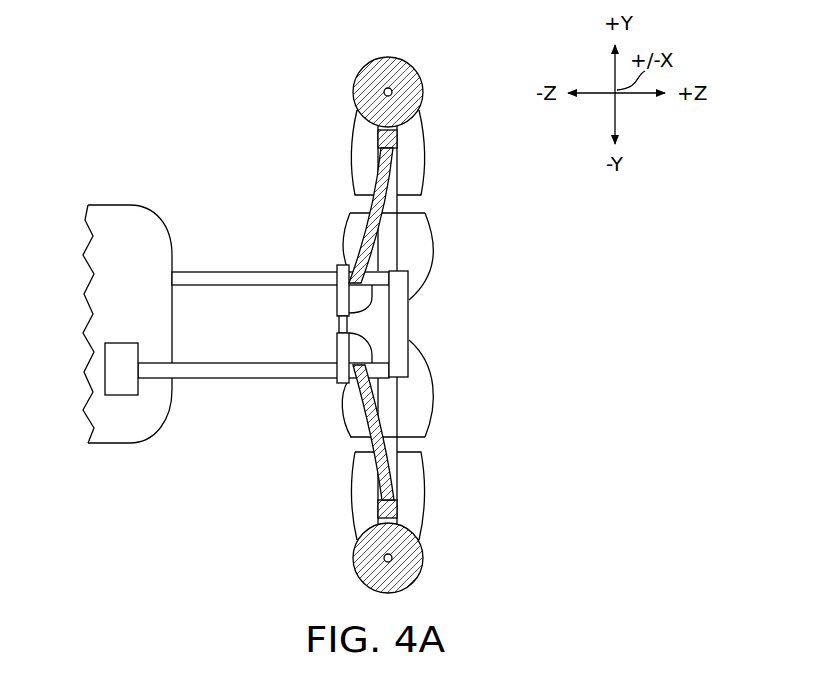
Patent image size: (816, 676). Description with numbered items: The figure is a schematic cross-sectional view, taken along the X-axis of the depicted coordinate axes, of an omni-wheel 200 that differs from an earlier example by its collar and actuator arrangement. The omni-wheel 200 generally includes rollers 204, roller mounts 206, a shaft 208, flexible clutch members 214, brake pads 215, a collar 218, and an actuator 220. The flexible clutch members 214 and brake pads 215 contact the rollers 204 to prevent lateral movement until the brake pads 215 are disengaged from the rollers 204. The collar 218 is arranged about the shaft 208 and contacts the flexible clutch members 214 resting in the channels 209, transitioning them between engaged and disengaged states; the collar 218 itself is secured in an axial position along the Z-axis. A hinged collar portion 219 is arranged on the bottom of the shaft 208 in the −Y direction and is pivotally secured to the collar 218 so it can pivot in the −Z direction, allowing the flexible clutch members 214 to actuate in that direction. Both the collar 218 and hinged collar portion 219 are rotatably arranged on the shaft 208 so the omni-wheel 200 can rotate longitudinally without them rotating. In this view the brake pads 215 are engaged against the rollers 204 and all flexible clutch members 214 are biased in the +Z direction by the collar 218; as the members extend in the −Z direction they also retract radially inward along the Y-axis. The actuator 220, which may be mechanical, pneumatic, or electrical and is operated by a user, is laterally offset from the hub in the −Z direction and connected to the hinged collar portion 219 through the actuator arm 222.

The omni-wheel 200 is at (104, 133).
The rollers 204 is at (401, 58).
The roller mounts 206 is at (402, 252).
The shaft 208 is at (400, 288).
The channels 209 is at (349, 313).
The flexible clutch members 214 is at (392, 159).
The brake pads 215 is at (390, 137).
The collar 218 is at (337, 290).
The hinged collar portion 219 is at (338, 375).
The actuator 220 is at (122, 343).
The actuator arm 222 is at (206, 363).